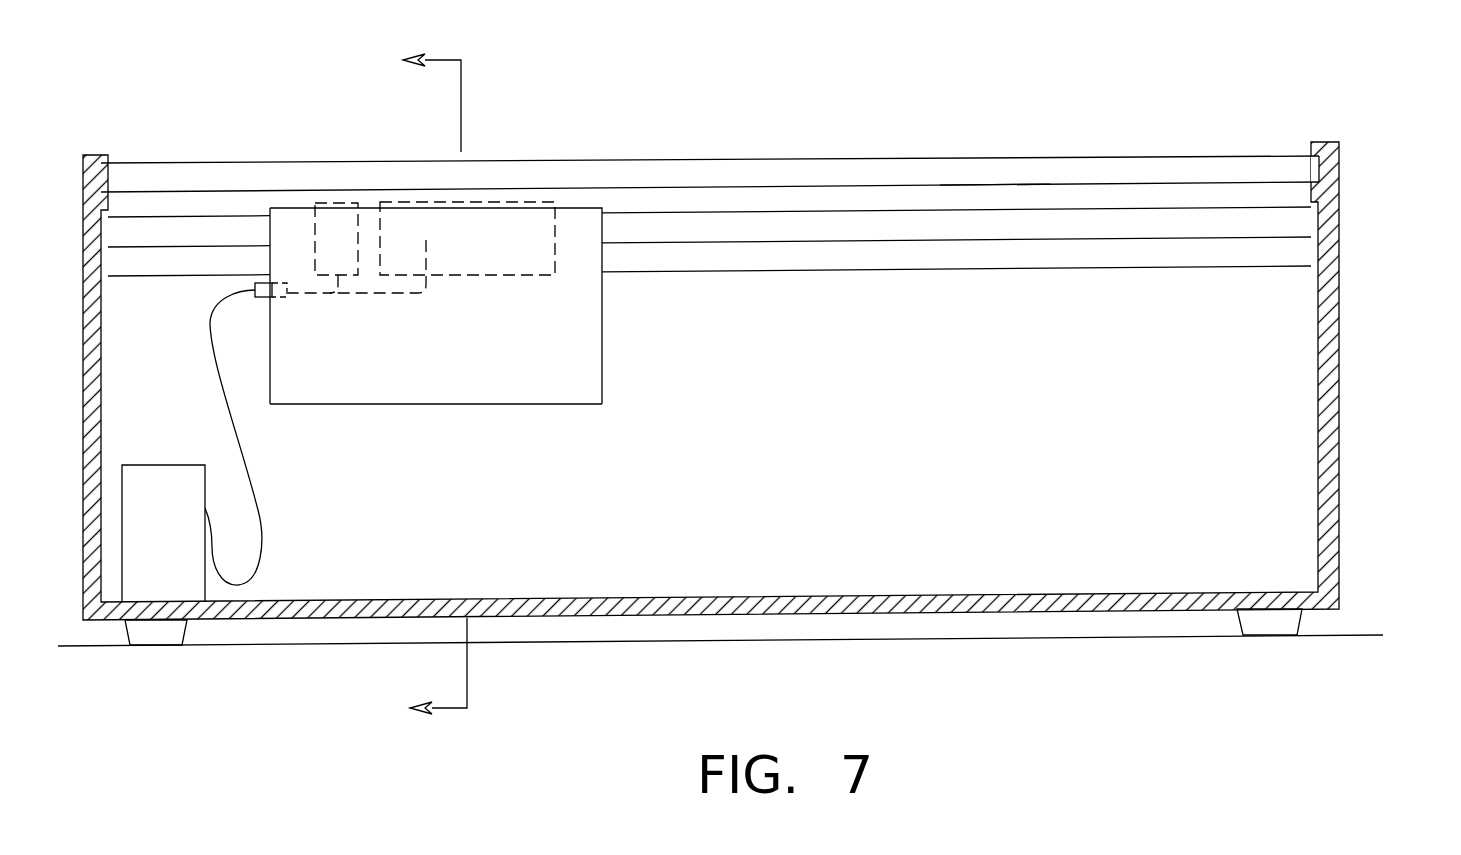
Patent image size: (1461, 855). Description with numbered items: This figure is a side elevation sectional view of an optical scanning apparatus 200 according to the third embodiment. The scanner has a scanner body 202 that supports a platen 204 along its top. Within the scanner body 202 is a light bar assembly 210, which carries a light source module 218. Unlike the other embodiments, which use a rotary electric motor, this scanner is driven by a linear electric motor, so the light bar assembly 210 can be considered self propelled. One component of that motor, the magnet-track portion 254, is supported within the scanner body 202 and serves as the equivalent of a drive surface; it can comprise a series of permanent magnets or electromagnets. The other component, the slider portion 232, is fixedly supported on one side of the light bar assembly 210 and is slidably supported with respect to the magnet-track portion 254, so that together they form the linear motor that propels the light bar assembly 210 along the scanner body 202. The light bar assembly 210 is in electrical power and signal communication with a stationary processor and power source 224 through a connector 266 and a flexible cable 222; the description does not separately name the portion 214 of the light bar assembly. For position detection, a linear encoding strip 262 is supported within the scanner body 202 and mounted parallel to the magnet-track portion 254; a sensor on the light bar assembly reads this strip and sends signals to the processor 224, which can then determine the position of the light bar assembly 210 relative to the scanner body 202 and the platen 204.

The optical scanning apparatus 200 is at (1170, 84).
The scanner body 202 is at (1340, 178).
The platen 204 is at (812, 172).
The magnet-track portion 254 is at (995, 197).
The linear encoding strip 262 is at (935, 258).
The light bar assembly 210 is at (618, 361).
The carriage bottom plate 214 is at (533, 395).
The light source module 218 is at (333, 222).
The slider portion 232 is at (488, 258).
The connector 266 is at (263, 298).
The flexible cable 222 is at (208, 320).
The stationary processor and power source 224 is at (161, 478).